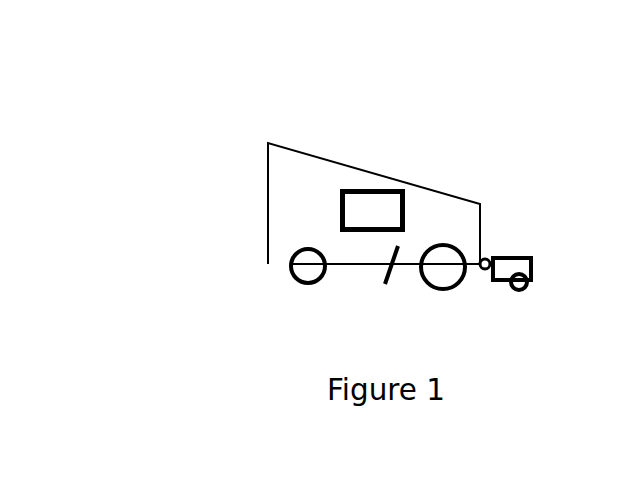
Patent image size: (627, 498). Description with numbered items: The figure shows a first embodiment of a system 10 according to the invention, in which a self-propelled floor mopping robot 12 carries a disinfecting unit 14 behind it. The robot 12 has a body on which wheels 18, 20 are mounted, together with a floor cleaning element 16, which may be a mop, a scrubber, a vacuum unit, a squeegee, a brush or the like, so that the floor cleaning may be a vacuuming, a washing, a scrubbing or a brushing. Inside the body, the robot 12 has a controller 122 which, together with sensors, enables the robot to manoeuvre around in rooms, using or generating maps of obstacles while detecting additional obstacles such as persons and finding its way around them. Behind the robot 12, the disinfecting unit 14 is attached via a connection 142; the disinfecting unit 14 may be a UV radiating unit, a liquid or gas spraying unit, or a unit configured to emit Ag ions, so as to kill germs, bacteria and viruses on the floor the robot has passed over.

The vehicle 10 is at (244, 123).
The self-propelled floor mopping robot 12 is at (323, 212).
The controller 122 is at (395, 226).
The disinfecting unit 14 is at (532, 272).
The connection 142 is at (492, 253).
The floor cleaning element 16 is at (398, 288).
The wheel 18 is at (446, 291).
The wheel 20 is at (308, 287).